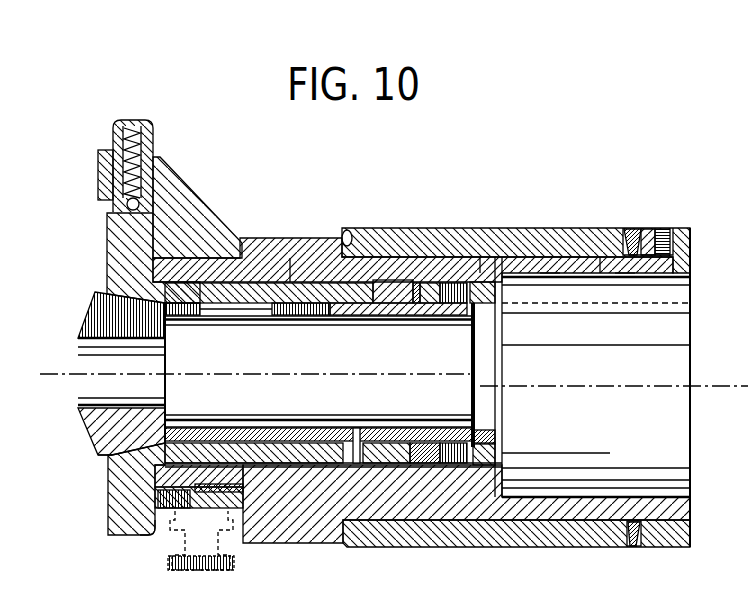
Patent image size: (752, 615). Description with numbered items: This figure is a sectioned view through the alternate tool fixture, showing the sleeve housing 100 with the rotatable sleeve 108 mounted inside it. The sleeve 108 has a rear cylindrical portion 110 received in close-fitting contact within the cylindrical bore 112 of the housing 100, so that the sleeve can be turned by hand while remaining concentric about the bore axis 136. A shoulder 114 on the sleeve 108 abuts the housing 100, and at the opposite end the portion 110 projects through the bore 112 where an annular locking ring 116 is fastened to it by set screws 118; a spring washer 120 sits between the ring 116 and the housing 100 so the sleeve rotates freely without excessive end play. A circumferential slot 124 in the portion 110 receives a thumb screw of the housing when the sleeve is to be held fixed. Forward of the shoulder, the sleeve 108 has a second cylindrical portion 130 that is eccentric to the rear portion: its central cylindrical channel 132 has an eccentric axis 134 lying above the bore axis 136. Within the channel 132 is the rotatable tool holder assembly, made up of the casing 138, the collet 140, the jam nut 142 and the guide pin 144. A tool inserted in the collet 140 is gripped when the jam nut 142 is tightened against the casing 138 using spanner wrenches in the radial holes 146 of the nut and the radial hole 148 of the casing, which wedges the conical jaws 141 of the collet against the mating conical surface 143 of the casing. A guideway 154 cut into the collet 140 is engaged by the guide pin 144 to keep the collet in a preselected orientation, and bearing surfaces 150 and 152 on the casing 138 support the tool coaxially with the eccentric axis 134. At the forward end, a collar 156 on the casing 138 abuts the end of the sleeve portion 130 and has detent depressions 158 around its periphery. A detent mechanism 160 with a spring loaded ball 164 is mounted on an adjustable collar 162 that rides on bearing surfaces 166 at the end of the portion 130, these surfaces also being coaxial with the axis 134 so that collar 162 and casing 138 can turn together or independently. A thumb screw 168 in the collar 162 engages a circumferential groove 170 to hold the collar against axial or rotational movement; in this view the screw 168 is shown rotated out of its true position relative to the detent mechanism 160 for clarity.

The sleeve housing 100 is at (420, 238).
The rotatable sleeve 108 is at (325, 237).
The rear cylindrical portion 110 is at (547, 273).
The cylindrical bore 112 is at (559, 257).
The shoulder 114 is at (350, 232).
The annular locking ring 116 is at (625, 253).
The set screws 118 is at (662, 235).
The spring washer 120 is at (624, 273).
The circumferential slot 124 is at (490, 250).
The second cylindrical portion 130 is at (225, 258).
The central cylindrical channel 132 is at (275, 268).
The eccentric axis 134 is at (303, 376).
The bore axis 136 is at (605, 388).
The casing 138 is at (165, 293).
The collet 140 is at (170, 290).
The conical jaws 141 is at (100, 422).
The jam nut 142 is at (500, 432).
The mating conical surface 143 is at (113, 455).
The guide pin 144 is at (364, 443).
The radial holes 146 is at (505, 325).
The radial hole 148 is at (290, 285).
The bearing surface 150 is at (206, 268).
The bearing surface 152 is at (372, 280).
The guideway 154 is at (298, 440).
The collar 156 is at (118, 515).
The detent depressions 158 is at (140, 535).
The detent mechanism 160 is at (132, 119).
The adjustable collar 162 is at (185, 208).
The spring loaded ball 164 is at (126, 206).
The bearing surfaces 166 is at (173, 497).
The thumb screw 168 is at (192, 578).
The circumferential groove 170 is at (207, 486).